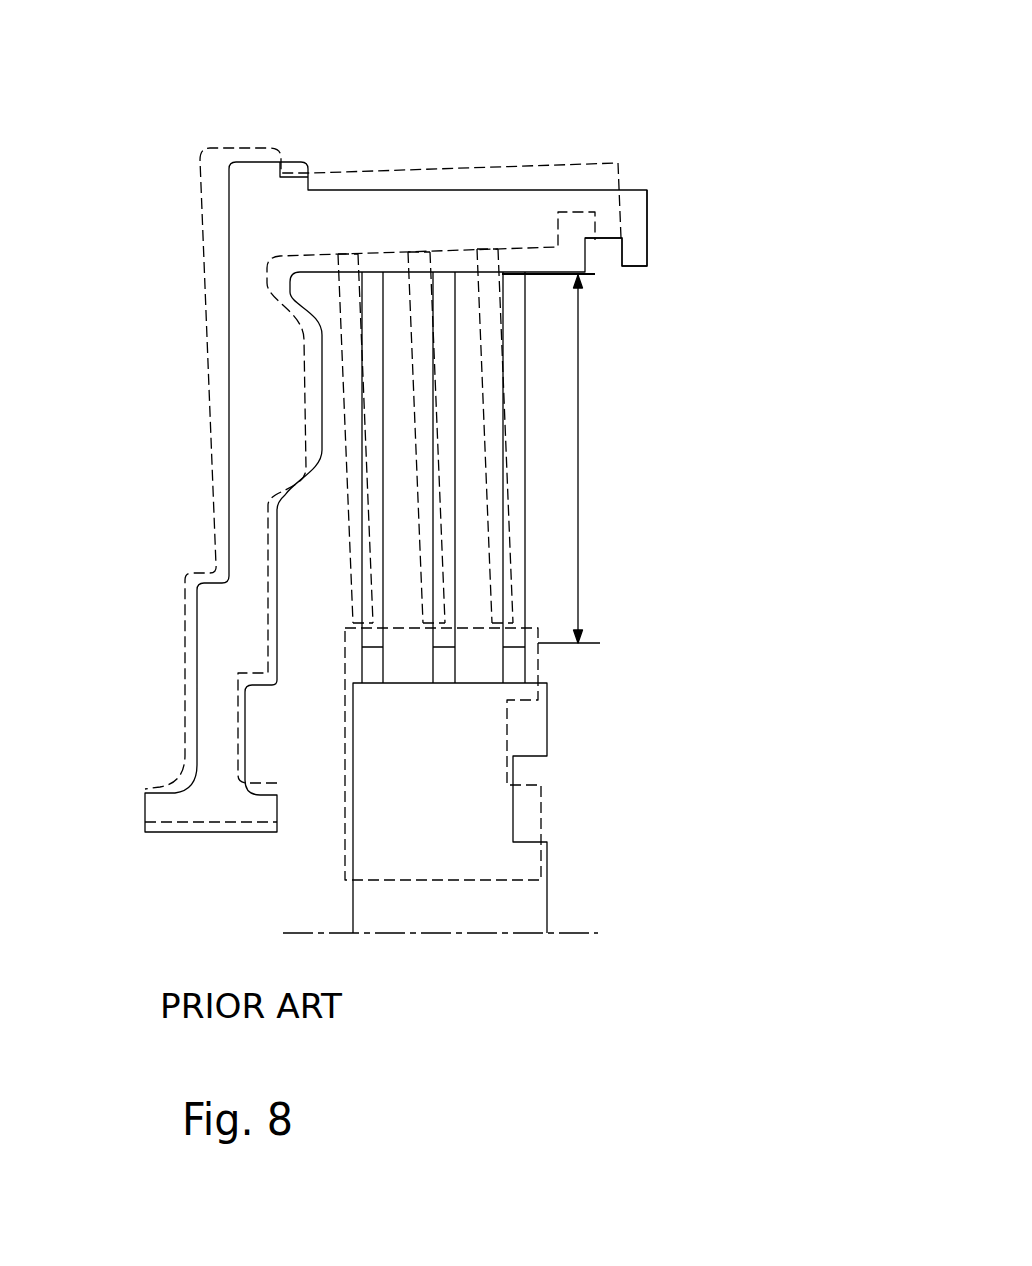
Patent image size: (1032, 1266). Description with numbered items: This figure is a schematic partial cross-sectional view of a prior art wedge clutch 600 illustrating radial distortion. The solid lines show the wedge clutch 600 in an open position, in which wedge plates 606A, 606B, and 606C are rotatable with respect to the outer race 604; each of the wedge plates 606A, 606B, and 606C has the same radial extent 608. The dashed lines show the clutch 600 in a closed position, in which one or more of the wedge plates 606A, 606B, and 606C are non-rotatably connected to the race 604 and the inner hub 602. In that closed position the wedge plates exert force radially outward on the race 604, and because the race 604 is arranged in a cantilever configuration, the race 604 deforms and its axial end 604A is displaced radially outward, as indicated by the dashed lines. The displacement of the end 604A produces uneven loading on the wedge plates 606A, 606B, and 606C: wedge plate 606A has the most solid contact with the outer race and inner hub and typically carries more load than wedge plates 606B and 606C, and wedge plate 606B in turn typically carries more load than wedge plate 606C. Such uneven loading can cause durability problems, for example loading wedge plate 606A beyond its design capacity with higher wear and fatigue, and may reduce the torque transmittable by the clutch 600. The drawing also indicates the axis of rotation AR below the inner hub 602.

The wedge clutch 600 is at (618, 105).
The outer race 604 is at (290, 160).
The axial end 604A is at (647, 211).
The wedge plate 606A is at (435, 553).
The wedge plate 606B is at (363, 515).
The wedge plate 606C is at (512, 572).
The radial extent 608 is at (575, 435).
The inner hub 602 is at (539, 668).
The axis of rotation AR is at (575, 935).